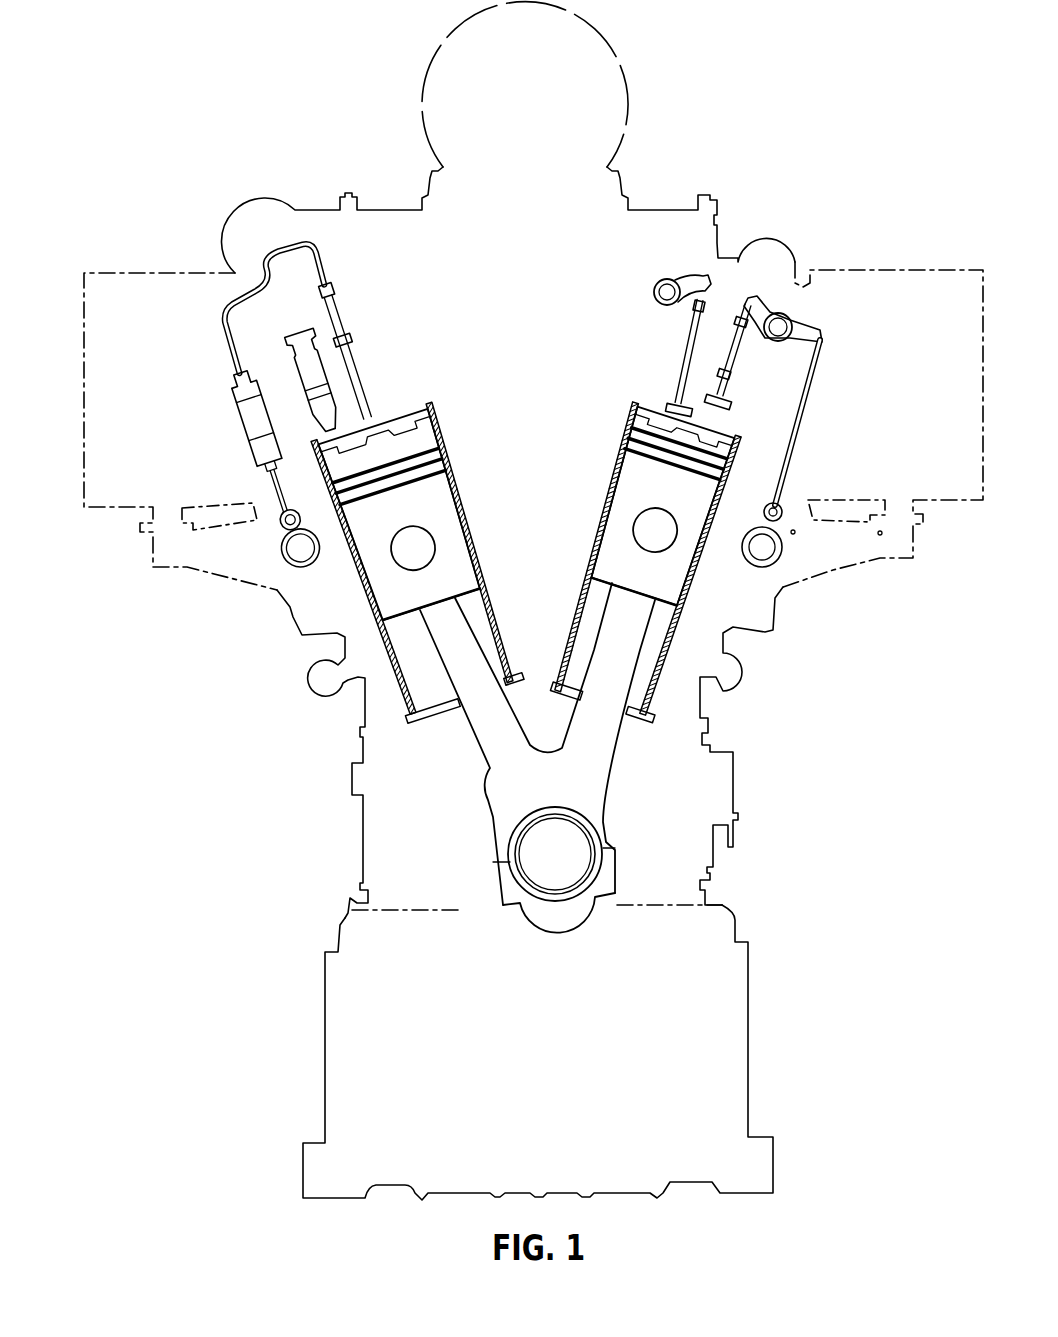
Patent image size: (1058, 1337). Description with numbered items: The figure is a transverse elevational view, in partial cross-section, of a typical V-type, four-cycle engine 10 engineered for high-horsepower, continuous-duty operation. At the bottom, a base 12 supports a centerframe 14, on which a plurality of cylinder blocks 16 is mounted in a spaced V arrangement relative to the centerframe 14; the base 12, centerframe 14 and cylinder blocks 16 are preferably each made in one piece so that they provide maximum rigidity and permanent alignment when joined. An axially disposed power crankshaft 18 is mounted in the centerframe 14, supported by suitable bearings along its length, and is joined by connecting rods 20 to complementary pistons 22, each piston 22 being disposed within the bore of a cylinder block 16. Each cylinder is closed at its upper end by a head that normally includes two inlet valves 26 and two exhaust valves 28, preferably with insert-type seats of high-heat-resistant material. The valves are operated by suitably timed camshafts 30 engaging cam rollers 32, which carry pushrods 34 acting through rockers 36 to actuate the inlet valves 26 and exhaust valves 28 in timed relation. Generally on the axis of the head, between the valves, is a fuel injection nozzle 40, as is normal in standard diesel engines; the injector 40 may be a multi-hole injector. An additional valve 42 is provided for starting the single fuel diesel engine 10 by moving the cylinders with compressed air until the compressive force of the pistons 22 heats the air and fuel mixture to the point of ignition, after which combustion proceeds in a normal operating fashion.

The engine 10 is at (792, 902).
The base 12 is at (327, 1108).
The centerframe 14 is at (733, 740).
The cylinder block 16 is at (372, 582).
The power crankshaft 18 is at (562, 868).
The connecting rod 20 is at (457, 673).
The piston 22 is at (392, 583).
The inlet valve 26 is at (716, 400).
The exhaust valve 28 is at (712, 412).
The camshaft 30 is at (767, 547).
The cam roller 32 is at (782, 520).
The pushrod 34 is at (807, 393).
The rocker 36 is at (687, 280).
The fuel injection nozzle 40 is at (342, 310).
The additional valve 42 is at (330, 362).